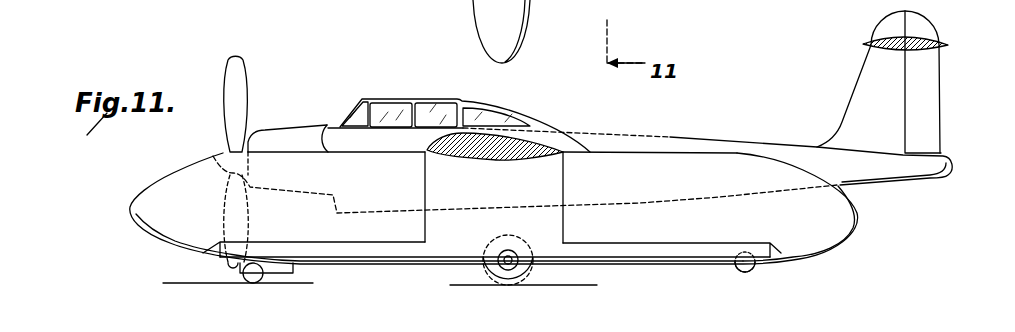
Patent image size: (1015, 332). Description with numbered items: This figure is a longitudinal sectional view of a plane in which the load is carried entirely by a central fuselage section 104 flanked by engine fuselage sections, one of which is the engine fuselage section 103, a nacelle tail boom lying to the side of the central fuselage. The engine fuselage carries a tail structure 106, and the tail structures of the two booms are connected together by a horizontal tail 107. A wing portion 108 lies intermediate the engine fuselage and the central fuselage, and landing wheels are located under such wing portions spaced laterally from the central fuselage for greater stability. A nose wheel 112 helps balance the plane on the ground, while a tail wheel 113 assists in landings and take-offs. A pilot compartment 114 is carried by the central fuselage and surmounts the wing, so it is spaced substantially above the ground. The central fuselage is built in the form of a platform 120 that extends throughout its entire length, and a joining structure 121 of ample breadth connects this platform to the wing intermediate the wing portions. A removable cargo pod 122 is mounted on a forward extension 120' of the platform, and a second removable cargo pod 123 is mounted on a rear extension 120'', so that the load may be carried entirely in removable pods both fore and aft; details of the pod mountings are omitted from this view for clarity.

The left engine fuselage section 103 is at (293, 130).
The central fuselage section 104 is at (553, 262).
The tail structure 106 is at (860, 88).
The horizontal tail 107 is at (867, 42).
The wing portion 108 is at (495, 161).
The nose wheel 112 is at (255, 280).
The tail wheel 113 is at (753, 268).
The pilot compartment 114 is at (427, 94).
The platform 120 is at (495, 271).
The forward extension 120' is at (314, 236).
The rear extension 120'' is at (672, 237).
The joining structure 121 is at (563, 185).
The removable cargo pod 122 is at (150, 183).
The second removable cargo pod 123 is at (853, 208).